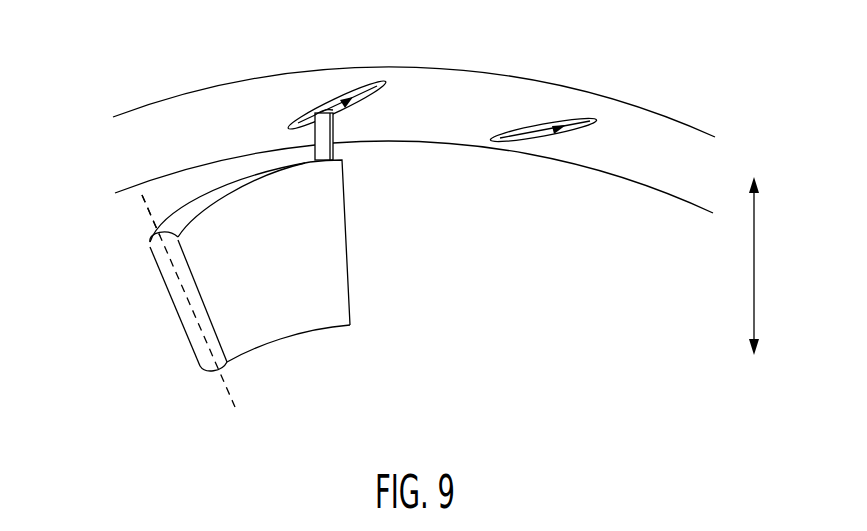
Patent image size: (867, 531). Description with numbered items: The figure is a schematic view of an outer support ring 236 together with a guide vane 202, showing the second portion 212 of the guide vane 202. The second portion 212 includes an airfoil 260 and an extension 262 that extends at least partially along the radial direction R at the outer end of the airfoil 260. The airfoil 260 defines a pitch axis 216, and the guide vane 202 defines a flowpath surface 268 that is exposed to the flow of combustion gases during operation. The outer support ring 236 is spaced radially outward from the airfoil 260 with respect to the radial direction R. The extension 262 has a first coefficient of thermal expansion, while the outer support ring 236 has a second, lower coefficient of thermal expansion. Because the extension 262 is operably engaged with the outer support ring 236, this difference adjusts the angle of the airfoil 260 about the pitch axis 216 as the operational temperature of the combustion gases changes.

The outer support ring 236 is at (197, 104).
The guide vane 202 is at (196, 196).
The extension 262 is at (333, 135).
The second portion 212 is at (282, 270).
The pitch axis 216 is at (142, 202).
The flowpath surface 268 is at (325, 215).
The airfoil 260 is at (278, 315).
The radial direction R is at (755, 273).